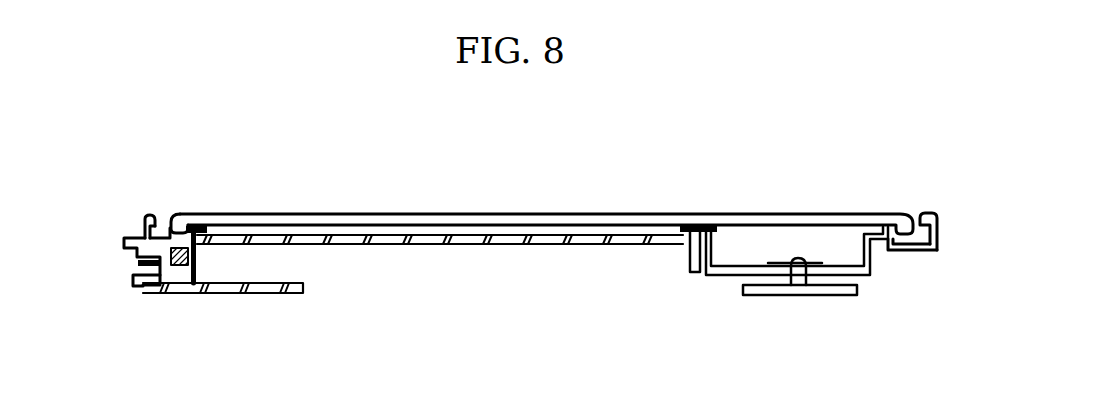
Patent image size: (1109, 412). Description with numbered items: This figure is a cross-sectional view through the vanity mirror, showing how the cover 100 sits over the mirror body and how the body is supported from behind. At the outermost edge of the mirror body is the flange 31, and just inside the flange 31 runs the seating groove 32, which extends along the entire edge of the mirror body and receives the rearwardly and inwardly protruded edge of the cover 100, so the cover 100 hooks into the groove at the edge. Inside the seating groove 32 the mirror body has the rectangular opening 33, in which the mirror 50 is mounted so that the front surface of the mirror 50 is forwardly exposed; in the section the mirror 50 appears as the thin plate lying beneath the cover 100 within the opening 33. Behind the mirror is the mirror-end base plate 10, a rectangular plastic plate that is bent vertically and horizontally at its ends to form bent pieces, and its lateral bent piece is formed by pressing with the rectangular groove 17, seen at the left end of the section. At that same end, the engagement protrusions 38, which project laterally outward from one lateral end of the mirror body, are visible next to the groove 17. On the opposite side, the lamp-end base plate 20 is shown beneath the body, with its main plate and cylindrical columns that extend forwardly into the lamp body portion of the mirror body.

The cover 100 is at (625, 215).
The mirror 50 is at (428, 245).
The opening 33 is at (522, 267).
The base plate 10 is at (240, 295).
The rectangular groove 17 is at (142, 265).
The engagement protrusions 38 is at (158, 268).
The base plate 20 is at (813, 296).
The flange 31 is at (924, 212).
The seating groove 32 is at (908, 252).